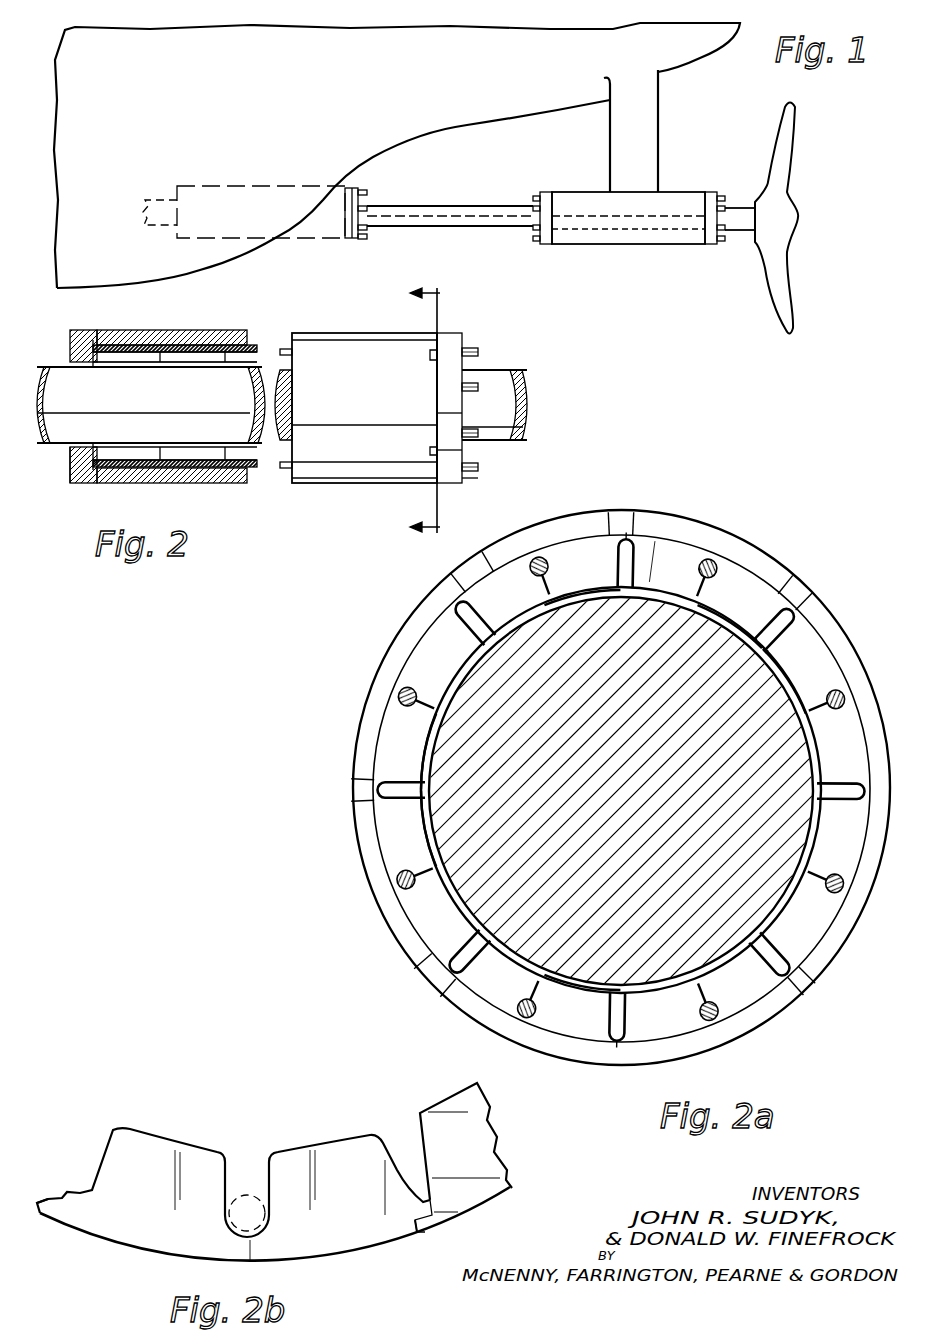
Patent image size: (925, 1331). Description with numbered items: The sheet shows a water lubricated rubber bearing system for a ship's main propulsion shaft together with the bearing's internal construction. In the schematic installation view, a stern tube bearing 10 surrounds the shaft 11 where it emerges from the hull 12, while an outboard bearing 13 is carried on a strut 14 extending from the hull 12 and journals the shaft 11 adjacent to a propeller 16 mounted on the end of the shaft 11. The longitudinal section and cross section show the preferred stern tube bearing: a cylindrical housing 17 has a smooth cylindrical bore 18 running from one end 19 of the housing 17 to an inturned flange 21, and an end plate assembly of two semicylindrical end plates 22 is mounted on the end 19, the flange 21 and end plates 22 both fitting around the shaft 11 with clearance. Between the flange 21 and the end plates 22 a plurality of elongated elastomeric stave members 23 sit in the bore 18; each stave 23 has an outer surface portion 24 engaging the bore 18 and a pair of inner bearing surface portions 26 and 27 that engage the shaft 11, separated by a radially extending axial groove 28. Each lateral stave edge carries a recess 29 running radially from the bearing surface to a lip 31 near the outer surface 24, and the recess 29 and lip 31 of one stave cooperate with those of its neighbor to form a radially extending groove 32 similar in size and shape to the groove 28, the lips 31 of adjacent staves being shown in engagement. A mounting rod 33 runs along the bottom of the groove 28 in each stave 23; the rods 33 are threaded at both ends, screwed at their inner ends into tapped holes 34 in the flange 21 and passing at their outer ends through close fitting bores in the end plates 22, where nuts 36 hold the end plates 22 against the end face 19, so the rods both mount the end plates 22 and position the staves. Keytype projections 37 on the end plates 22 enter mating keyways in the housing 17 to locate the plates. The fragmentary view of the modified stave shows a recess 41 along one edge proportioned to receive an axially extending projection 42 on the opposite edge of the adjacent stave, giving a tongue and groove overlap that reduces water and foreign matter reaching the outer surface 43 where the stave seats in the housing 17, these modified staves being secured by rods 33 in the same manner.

In FIG. 1, the stern tube bearing 10 is at (316, 230).
In FIG. 2, the stern tube bearing 10 is at (359, 497).
In FIG. 1, the shaft 11 is at (440, 222).
In FIG. 2, the shaft 11 is at (58, 375).
In FIG. 2A, the shaft 11 is at (660, 810).
In FIG. 1, the hull 12 is at (455, 128).
In FIG. 1, the outboard bearing 13 is at (629, 240).
In FIG. 1, the strut 14 is at (660, 135).
In FIG. 1, the propeller 16 is at (787, 282).
In FIG. 2, the cylindrical housing 17 is at (315, 478).
In FIG. 2A, the cylindrical housing 17 is at (710, 520).
In FIG. 2, the cylindrical bore 18 is at (133, 352).
In FIG. 2A, the cylindrical bore 18 is at (565, 535).
In FIG. 2, the end of housing 19 is at (445, 470).
In FIG. 2, the inturned flange 21 is at (68, 465).
In FIG. 2, the end plates 22 is at (462, 345).
In FIG. 2, the stave members 23 is at (175, 360).
In FIG. 2A, the stave members 23 is at (692, 540).
In FIG. 2A, the outer surface portion 24 is at (790, 600).
In FIG. 2A, the inner bearing surface portion 26 is at (690, 598).
In FIG. 2A, the inner bearing surface portion 27 is at (745, 638).
In FIG. 2A, the axial groove 28 is at (712, 625).
In FIG. 2A, the recess 29 is at (640, 600).
In FIG. 2A, the lip 31 is at (610, 540).
In FIG. 2A, the radially extending groove 32 is at (475, 625).
In FIG. 2, the mounting rod 33 is at (165, 336).
In FIG. 2A, the mounting rod 33 is at (725, 565).
In FIG. 2B, the mounting rod 33 is at (245, 1180).
In FIG. 2, the tapped holes 34 is at (82, 332).
In FIG. 2, the nuts 36 is at (468, 472).
In FIG. 2, the keytype projections 37 is at (428, 357).
In FIG. 2B, the recess 41 is at (432, 1225).
In FIG. 2B, the axially extending projection 42 is at (40, 1214).
In FIG. 2B, the outer surface 43 is at (497, 1195).